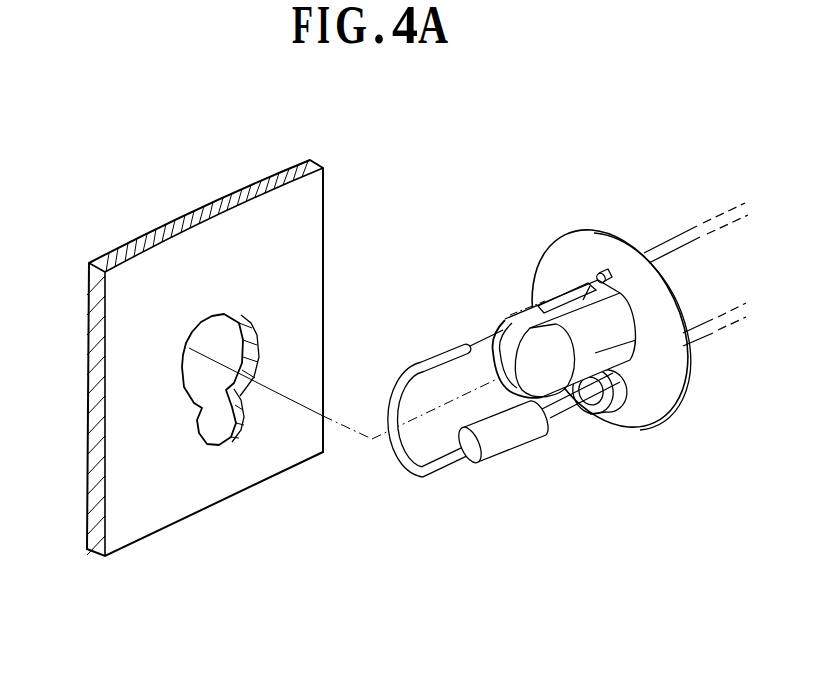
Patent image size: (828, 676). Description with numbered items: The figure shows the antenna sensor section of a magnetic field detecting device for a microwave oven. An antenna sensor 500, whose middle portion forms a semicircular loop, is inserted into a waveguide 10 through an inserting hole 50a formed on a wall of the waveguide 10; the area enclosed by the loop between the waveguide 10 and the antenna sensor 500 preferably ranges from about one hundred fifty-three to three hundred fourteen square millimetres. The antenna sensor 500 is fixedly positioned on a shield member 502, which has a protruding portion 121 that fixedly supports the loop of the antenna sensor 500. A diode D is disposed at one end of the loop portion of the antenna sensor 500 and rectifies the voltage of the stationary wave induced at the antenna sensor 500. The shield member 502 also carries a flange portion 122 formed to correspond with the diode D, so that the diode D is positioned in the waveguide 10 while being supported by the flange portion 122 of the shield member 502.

The waveguide 10 is at (318, 200).
The inserting hole 50a is at (255, 337).
The protruding portion 121 is at (500, 327).
The flange portion 122 is at (593, 418).
The antenna sensor 500 is at (390, 463).
The shield member 502 is at (586, 238).
The diode D is at (503, 452).